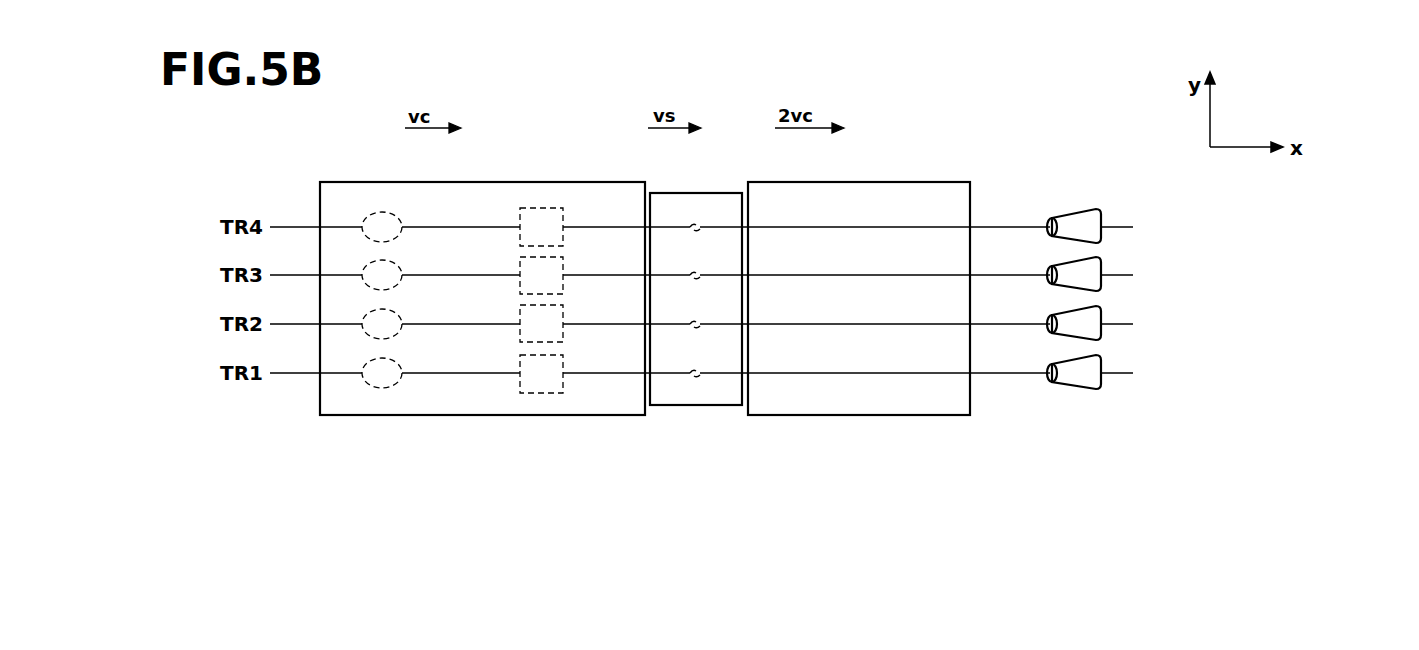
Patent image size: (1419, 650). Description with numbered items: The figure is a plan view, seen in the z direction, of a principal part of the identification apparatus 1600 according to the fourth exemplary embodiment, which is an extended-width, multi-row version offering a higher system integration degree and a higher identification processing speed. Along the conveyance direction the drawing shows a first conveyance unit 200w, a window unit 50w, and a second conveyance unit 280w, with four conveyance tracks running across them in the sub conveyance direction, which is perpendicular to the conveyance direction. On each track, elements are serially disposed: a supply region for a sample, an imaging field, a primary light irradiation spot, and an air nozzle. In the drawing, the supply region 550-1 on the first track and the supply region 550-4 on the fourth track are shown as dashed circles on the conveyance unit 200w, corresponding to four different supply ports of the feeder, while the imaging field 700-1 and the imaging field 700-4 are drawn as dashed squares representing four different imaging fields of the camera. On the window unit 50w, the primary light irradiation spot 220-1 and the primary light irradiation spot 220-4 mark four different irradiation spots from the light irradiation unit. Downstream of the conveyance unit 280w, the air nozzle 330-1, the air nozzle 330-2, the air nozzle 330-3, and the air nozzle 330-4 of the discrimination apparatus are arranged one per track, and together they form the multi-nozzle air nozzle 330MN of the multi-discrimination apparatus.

The identification apparatus 1600 is at (350, 131).
The conveyance unit 200w is at (493, 182).
The supply region 550-4 is at (382, 213).
The supply region 550-1 is at (383, 388).
The imaging field 700-4 is at (541, 208).
The imaging field 700-1 is at (540, 393).
The window unit 50w is at (670, 193).
The primary light irradiation spot 220-4 is at (695, 225).
The primary light irradiation spot 220-1 is at (695, 378).
The conveyance unit 280w is at (900, 182).
The air nozzle 330-1 is at (1070, 401).
The air nozzle 330-2 is at (1100, 340).
The air nozzle 330-3 is at (1100, 291).
The air nozzle 330-4 is at (1100, 243).
The air nozzle 330MN is at (1201, 351).